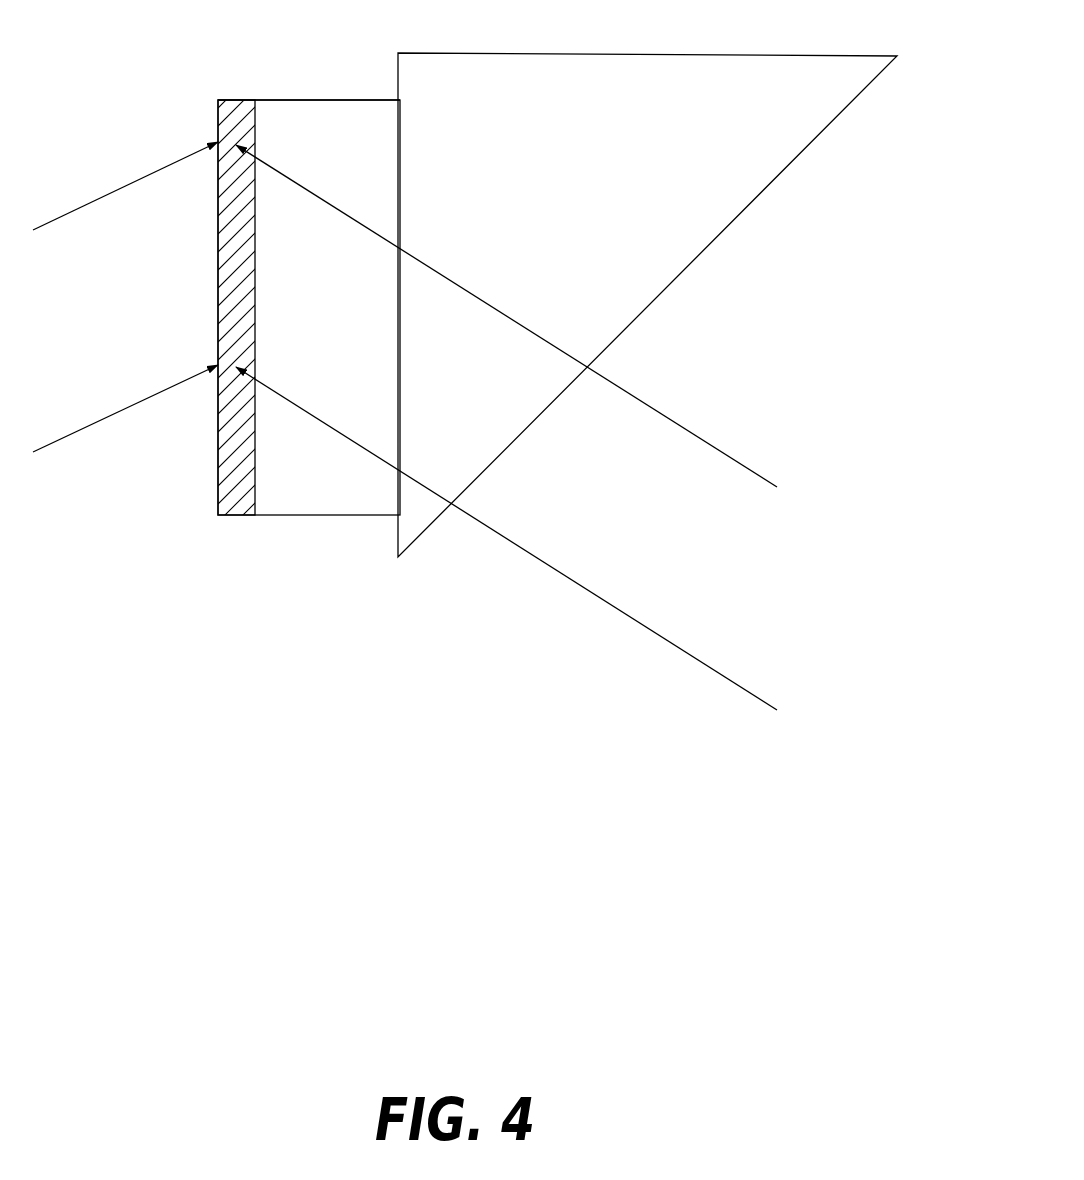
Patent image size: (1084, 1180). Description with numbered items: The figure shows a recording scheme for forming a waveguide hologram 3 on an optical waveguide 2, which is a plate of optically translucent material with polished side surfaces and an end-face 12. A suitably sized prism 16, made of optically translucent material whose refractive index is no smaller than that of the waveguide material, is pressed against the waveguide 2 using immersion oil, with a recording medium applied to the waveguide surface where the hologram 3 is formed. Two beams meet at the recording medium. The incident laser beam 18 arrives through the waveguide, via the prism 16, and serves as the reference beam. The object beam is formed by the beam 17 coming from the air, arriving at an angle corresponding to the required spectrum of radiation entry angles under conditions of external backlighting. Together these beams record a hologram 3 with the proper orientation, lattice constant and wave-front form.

The optical waveguide 2 is at (317, 502).
The waveguide hologram 3 is at (233, 462).
The end-face 12 is at (288, 100).
The prism 16 is at (692, 210).
The beam 17 is at (73, 432).
The incident laser beam 18 is at (680, 425).